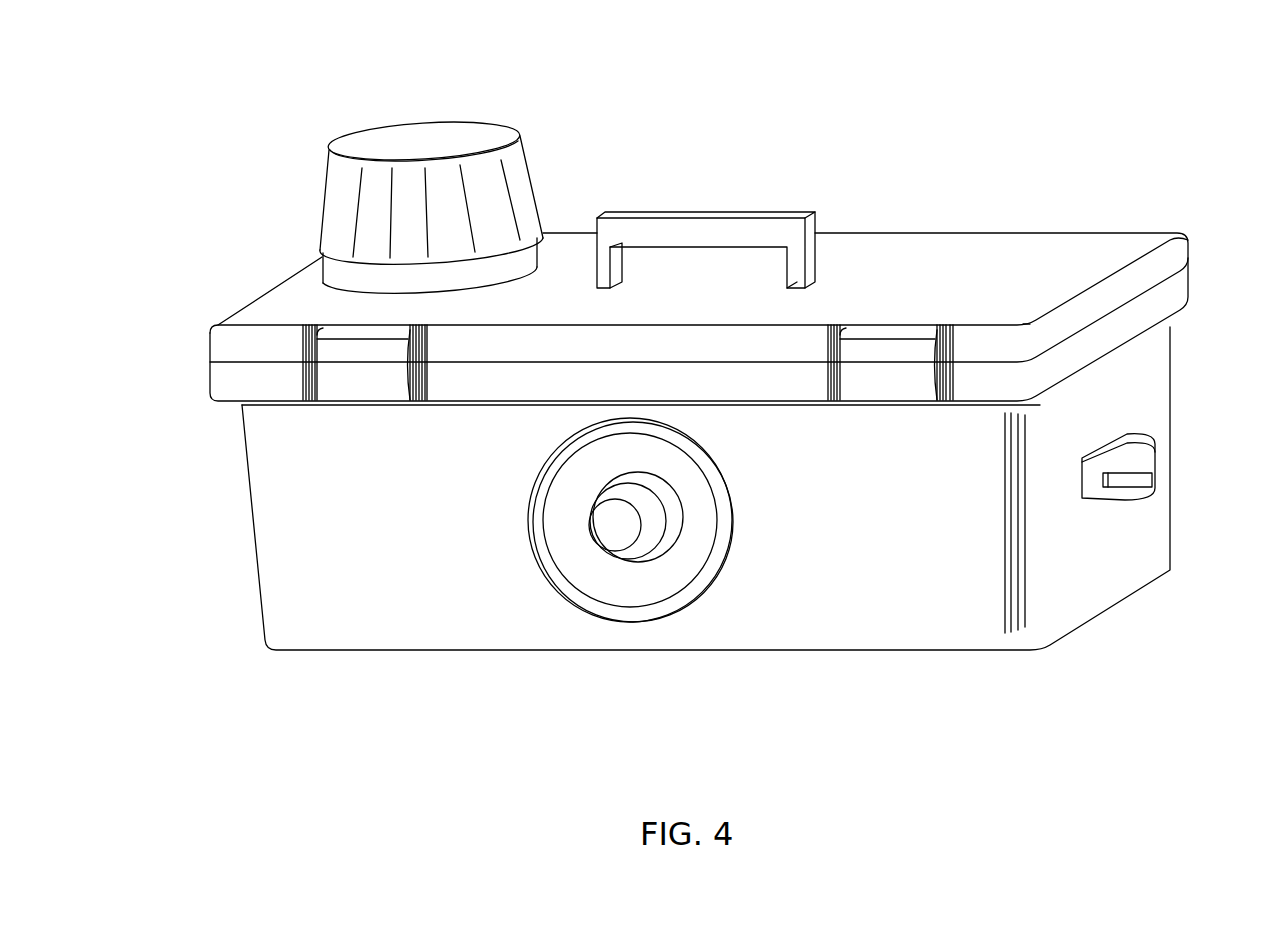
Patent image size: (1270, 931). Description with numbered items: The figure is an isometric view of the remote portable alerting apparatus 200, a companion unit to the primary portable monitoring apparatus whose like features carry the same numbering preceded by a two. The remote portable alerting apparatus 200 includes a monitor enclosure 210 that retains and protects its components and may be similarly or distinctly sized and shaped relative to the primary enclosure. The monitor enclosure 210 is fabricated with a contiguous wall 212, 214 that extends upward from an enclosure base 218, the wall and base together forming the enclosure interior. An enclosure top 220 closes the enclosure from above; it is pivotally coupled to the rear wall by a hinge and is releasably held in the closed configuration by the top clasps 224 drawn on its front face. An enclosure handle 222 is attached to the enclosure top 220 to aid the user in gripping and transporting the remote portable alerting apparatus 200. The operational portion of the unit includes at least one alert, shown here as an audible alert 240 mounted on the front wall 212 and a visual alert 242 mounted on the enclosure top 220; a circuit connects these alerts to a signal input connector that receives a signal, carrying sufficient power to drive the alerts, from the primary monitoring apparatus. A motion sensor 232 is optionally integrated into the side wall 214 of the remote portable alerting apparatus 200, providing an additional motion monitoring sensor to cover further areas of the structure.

The remote portable alerting apparatus 200 is at (268, 128).
The monitor enclosure 210 is at (266, 660).
The contiguous wall 212 is at (810, 635).
The contiguous wall 214 is at (1105, 582).
The enclosure base 218 is at (460, 656).
The enclosure top 220 is at (1010, 253).
The enclosure handle 222 is at (708, 213).
The top clasp 224 is at (360, 373).
The motion sensor 232 is at (1150, 472).
The audible alert 240 is at (595, 607).
The visual alert 242 is at (423, 137).